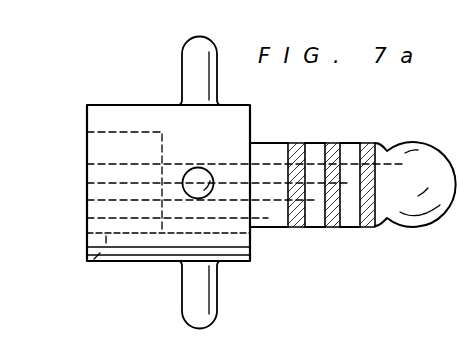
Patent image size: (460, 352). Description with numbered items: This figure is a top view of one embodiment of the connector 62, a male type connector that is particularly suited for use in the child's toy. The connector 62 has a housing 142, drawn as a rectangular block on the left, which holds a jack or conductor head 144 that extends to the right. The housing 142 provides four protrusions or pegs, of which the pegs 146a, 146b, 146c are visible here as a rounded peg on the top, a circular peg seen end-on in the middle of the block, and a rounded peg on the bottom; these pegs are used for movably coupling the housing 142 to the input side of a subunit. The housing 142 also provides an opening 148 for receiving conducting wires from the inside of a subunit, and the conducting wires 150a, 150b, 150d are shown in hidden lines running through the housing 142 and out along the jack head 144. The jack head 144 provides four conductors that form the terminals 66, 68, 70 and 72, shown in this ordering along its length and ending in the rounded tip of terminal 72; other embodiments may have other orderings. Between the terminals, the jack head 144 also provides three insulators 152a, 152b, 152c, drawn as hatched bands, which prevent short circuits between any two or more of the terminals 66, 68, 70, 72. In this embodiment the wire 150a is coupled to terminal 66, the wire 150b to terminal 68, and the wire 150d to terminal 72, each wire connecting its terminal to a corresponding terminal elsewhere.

The connector 62 is at (93, 59).
The terminal 66 is at (278, 142).
The terminal 68 is at (312, 142).
The terminal 70 is at (350, 142).
The terminal 72 is at (419, 142).
The housing 142 is at (147, 263).
The jack head 144 is at (387, 300).
The peg 146a is at (187, 92).
The peg 146b is at (199, 167).
The peg 146c is at (215, 318).
The opening 148 is at (97, 263).
The conducting wire 150a is at (87, 183).
The conducting wire 150b is at (87, 200).
The conducting wire 150d is at (87, 164).
The insulator 152a is at (366, 228).
The insulator 152b is at (333, 228).
The insulator 152c is at (293, 228).